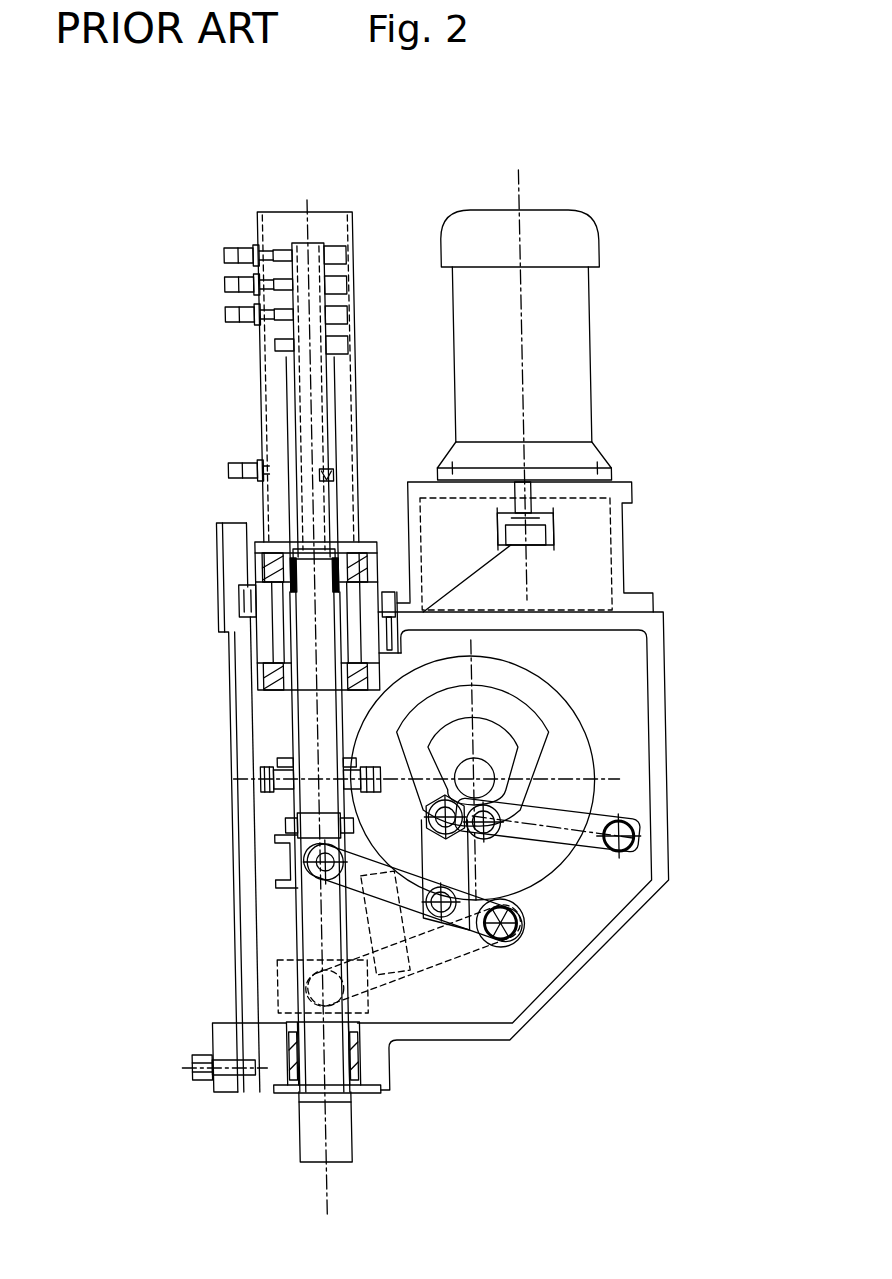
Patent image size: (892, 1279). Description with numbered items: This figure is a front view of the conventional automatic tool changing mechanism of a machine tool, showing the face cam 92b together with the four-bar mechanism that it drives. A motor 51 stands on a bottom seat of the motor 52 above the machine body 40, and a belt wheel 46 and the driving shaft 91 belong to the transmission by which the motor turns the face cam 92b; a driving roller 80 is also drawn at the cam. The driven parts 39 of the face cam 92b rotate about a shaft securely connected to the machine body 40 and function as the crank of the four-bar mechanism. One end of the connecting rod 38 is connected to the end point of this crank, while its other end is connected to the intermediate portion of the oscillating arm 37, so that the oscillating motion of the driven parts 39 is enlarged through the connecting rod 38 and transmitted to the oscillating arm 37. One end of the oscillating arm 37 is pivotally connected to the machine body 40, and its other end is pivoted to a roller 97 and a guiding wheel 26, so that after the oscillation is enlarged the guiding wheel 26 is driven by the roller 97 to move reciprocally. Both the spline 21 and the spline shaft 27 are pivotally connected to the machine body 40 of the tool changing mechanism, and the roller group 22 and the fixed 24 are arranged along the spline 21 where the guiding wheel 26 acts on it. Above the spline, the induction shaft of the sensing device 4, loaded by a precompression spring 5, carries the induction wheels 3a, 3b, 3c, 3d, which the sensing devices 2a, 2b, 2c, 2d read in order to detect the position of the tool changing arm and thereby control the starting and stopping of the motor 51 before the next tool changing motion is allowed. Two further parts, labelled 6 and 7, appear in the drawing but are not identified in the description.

The sensing device 2a is at (223, 258).
The sensing device 2b is at (223, 288).
The sensing device 2c is at (223, 318).
The sensing device 2d is at (223, 474).
The induction wheel 3a is at (345, 257).
The induction wheel 3b is at (345, 287).
The induction wheel 3c is at (345, 318).
The induction wheel 3d is at (345, 350).
The induction shaft of sensing device 4 is at (303, 370).
The precompression spring 5 is at (289, 413).
The stopper 6 is at (327, 475).
The cover tube 7 is at (357, 428).
The spline 21 is at (282, 722).
The roller group 22 is at (252, 780).
The fixed 24 is at (285, 825).
The guiding wheel 26 is at (286, 890).
The spline shaft 27 is at (296, 1125).
The oscillating arm 37 is at (452, 937).
The connecting rod 38 is at (440, 868).
The driven parts 39 is at (578, 823).
The machine body 40 is at (630, 893).
The belt wheel 46 is at (547, 520).
The motor 51 is at (565, 345).
The bottom seat of the motor 52 is at (610, 575).
The driving roller 80 is at (484, 843).
The driving shaft 91 is at (472, 770).
The face cam 92b is at (488, 697).
The roller 97 is at (277, 865).